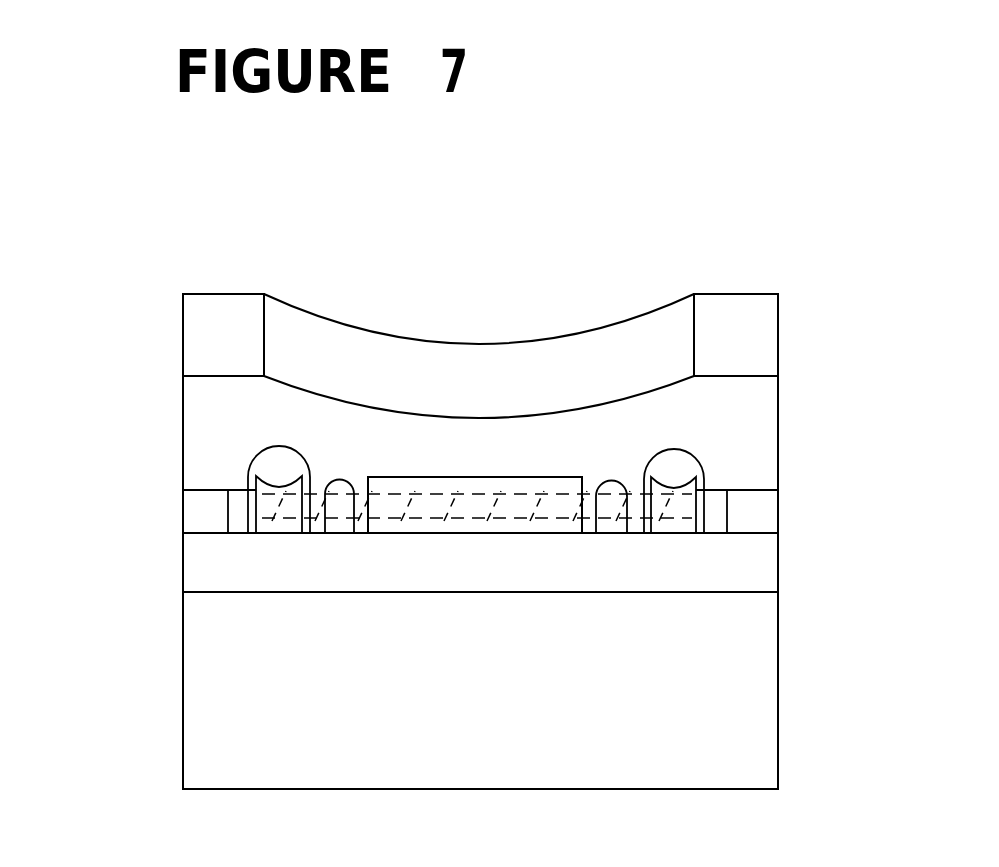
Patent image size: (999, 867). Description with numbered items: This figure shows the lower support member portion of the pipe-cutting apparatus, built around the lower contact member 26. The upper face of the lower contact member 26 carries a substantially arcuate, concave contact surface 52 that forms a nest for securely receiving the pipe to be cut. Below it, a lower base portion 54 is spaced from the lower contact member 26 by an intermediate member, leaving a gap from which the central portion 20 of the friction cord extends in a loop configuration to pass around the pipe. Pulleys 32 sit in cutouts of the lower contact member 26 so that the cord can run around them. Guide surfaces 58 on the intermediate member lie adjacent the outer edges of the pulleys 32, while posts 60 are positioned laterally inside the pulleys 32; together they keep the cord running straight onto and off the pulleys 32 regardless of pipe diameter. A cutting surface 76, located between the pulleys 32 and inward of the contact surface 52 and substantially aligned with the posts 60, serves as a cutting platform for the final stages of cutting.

The central portion 20 is at (543, 485).
The lower contact member 26 is at (780, 310).
The pulleys 32 is at (268, 487).
The contact surface 52 is at (463, 380).
The lower base portion 54 is at (486, 718).
The guide surfaces 58 is at (213, 510).
The posts 60 is at (337, 503).
The cutting surface 76 is at (500, 524).